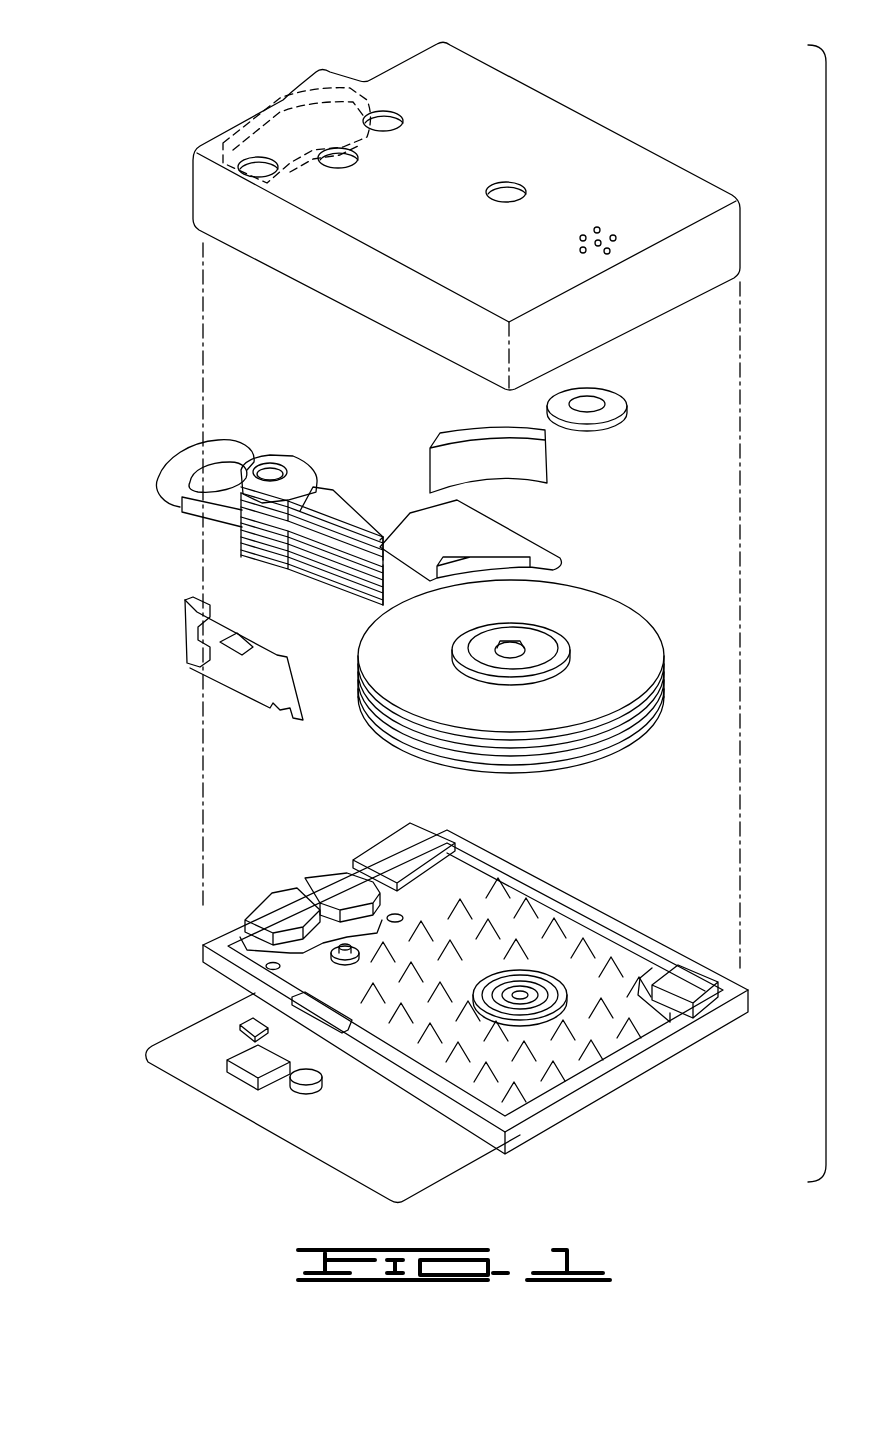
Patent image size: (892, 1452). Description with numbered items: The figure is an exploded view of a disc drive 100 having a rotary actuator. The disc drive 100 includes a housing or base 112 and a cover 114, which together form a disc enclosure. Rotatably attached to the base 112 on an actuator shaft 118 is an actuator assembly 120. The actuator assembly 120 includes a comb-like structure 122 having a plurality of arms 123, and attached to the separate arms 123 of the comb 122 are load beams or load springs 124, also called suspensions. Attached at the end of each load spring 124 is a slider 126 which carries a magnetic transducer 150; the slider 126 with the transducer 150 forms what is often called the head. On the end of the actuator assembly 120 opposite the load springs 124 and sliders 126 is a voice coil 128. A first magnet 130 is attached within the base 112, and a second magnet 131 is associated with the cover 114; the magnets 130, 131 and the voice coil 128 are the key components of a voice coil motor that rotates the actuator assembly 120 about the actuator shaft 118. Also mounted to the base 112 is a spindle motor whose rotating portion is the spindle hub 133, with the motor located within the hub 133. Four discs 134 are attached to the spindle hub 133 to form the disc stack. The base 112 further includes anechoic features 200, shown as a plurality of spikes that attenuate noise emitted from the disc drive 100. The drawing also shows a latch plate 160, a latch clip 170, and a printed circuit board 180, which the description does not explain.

The disc drive 100 is at (567, 52).
The base 112 is at (640, 940).
The cover 114 is at (622, 167).
The actuator shaft 118 is at (270, 458).
The actuator assembly 120 is at (217, 517).
The comb-like structure 122 is at (300, 572).
The arms 123 is at (333, 508).
The load springs 124 is at (337, 510).
The slider 126 is at (385, 533).
The voice coil 128 is at (178, 470).
The first magnet 130 is at (287, 93).
The second magnet 131 is at (288, 907).
The spindle hub 133 is at (517, 640).
The discs 134 is at (630, 643).
The magnetic transducer 150 is at (403, 530).
The latch plate 160 is at (253, 687).
The latch clip 170 is at (193, 670).
The printed circuit board 180 is at (250, 1067).
The anechoic features 200 is at (533, 897).